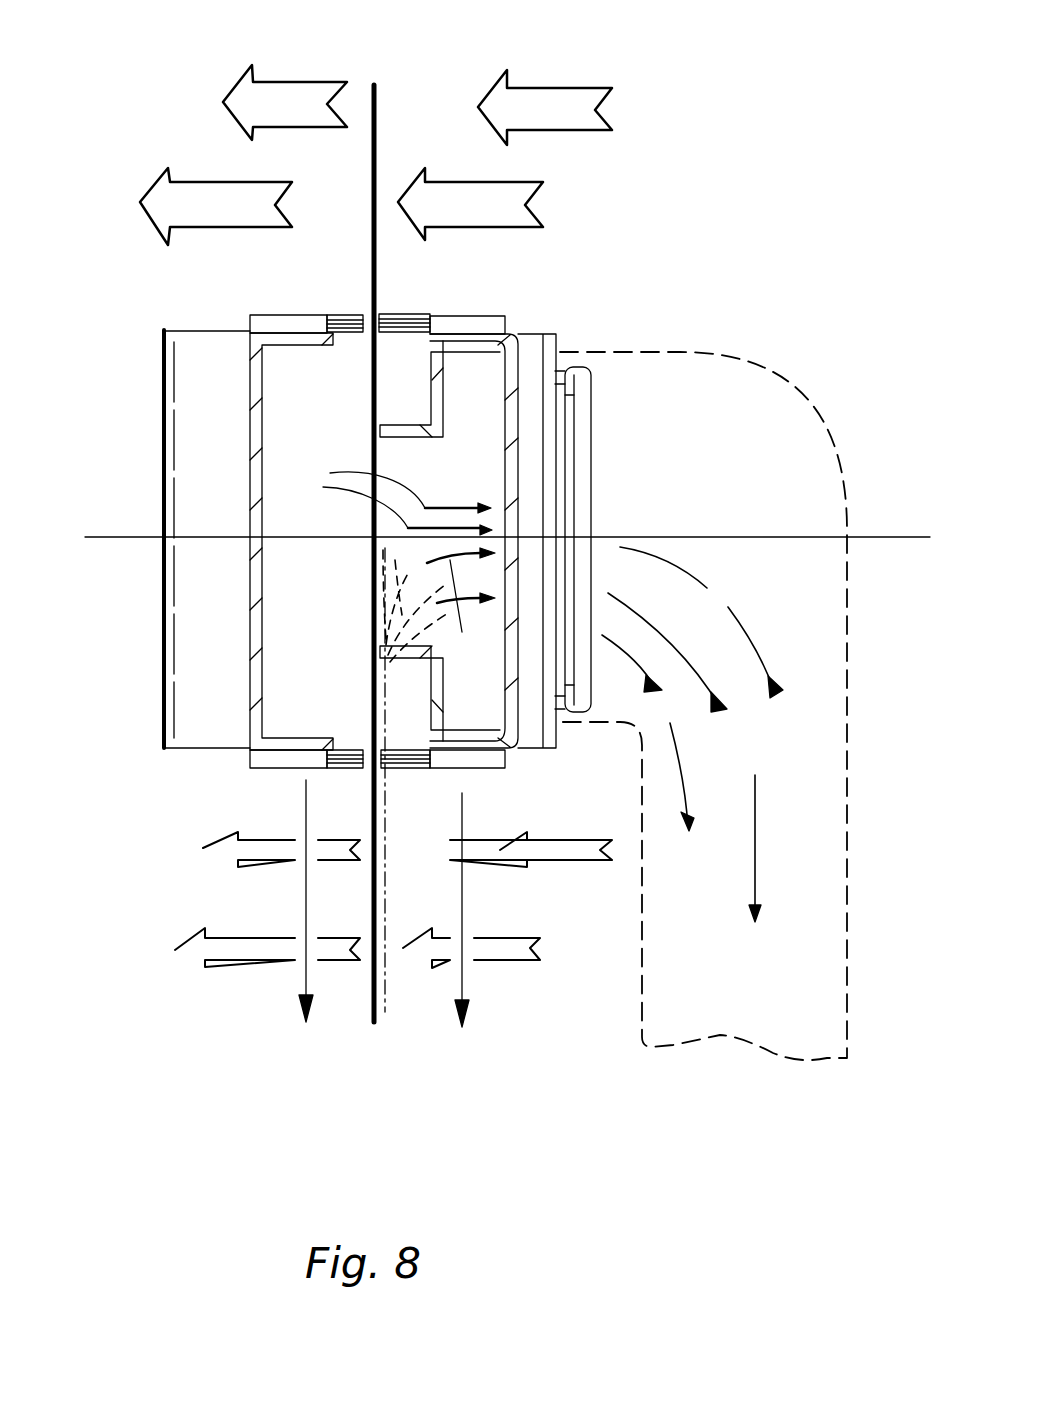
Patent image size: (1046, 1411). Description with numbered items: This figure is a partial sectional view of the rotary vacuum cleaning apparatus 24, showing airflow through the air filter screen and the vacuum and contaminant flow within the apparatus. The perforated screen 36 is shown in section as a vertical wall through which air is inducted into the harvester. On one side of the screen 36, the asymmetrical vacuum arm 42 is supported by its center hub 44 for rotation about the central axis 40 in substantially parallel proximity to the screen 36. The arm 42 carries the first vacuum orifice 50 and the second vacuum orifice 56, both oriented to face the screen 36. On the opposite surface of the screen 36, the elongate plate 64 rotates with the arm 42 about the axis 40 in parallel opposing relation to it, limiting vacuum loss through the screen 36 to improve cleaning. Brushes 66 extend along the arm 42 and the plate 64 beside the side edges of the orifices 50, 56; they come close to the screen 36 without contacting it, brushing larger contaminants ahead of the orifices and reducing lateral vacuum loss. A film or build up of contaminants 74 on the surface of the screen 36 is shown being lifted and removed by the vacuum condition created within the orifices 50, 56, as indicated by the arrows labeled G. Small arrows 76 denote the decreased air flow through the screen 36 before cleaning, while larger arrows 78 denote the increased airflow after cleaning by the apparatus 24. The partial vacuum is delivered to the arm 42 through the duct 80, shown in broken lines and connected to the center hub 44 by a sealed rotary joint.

The rotary vacuum cleaning apparatus 24 is at (690, 90).
The perforated screen 36 is at (374, 110).
The central axis 40 is at (885, 537).
The vacuum arm 42 is at (533, 333).
The center hub 44 is at (558, 336).
The first vacuum orifice 50 is at (387, 530).
The second vacuum orifice 56 is at (387, 530).
The elongate plate 64 is at (160, 395).
The brushes 66 is at (345, 312).
The contaminants 74 is at (383, 993).
The small arrows 76 is at (267, 862).
The larger arrows 78 is at (202, 182).
The duct 80 is at (853, 665).